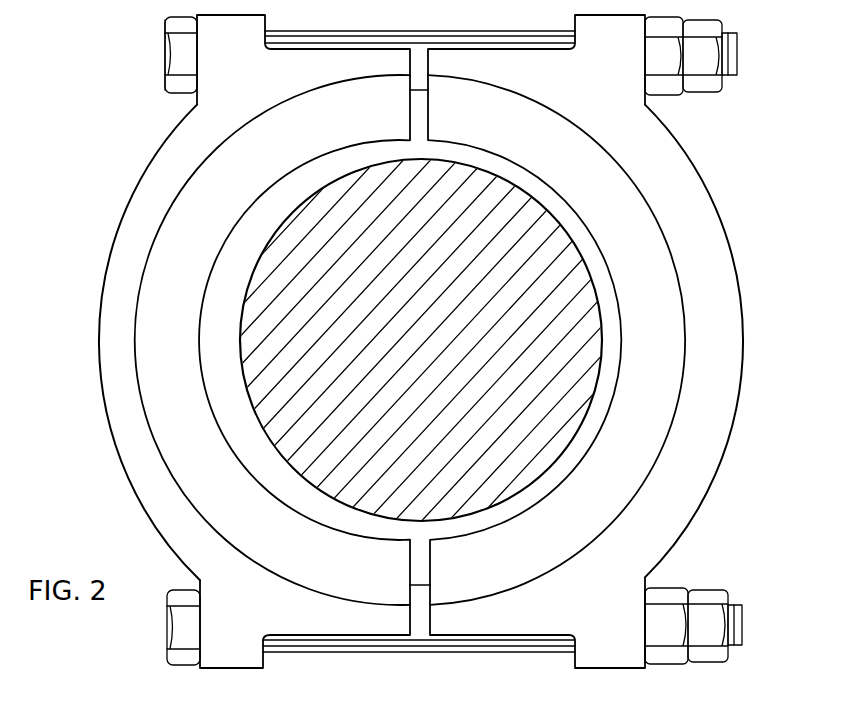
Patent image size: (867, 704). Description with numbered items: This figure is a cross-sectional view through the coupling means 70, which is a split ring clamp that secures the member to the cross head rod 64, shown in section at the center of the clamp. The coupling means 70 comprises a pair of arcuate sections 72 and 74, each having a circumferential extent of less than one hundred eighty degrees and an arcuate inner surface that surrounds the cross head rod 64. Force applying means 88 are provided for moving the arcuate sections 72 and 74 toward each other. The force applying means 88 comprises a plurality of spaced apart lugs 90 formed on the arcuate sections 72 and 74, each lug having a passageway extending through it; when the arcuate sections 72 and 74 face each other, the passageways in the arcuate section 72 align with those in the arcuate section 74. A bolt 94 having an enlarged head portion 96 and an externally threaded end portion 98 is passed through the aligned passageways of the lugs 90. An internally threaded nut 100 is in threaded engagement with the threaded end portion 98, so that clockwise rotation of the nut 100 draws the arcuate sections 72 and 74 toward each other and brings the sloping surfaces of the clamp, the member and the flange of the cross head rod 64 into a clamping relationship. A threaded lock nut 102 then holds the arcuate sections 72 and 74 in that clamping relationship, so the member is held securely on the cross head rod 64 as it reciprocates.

The cross head rod 64 is at (428, 309).
The coupling means 70 is at (720, 192).
The arcuate section 72 is at (102, 306).
The arcuate section 74 is at (728, 367).
The force applying means 88 is at (163, 110).
The lugs 90 is at (262, 27).
The bolt 94 is at (358, 42).
The enlarged head portion 96 is at (165, 59).
The externally threaded end portion 98 is at (737, 53).
The internally threaded nut 100 is at (663, 87).
The threaded lock nut 102 is at (708, 85).